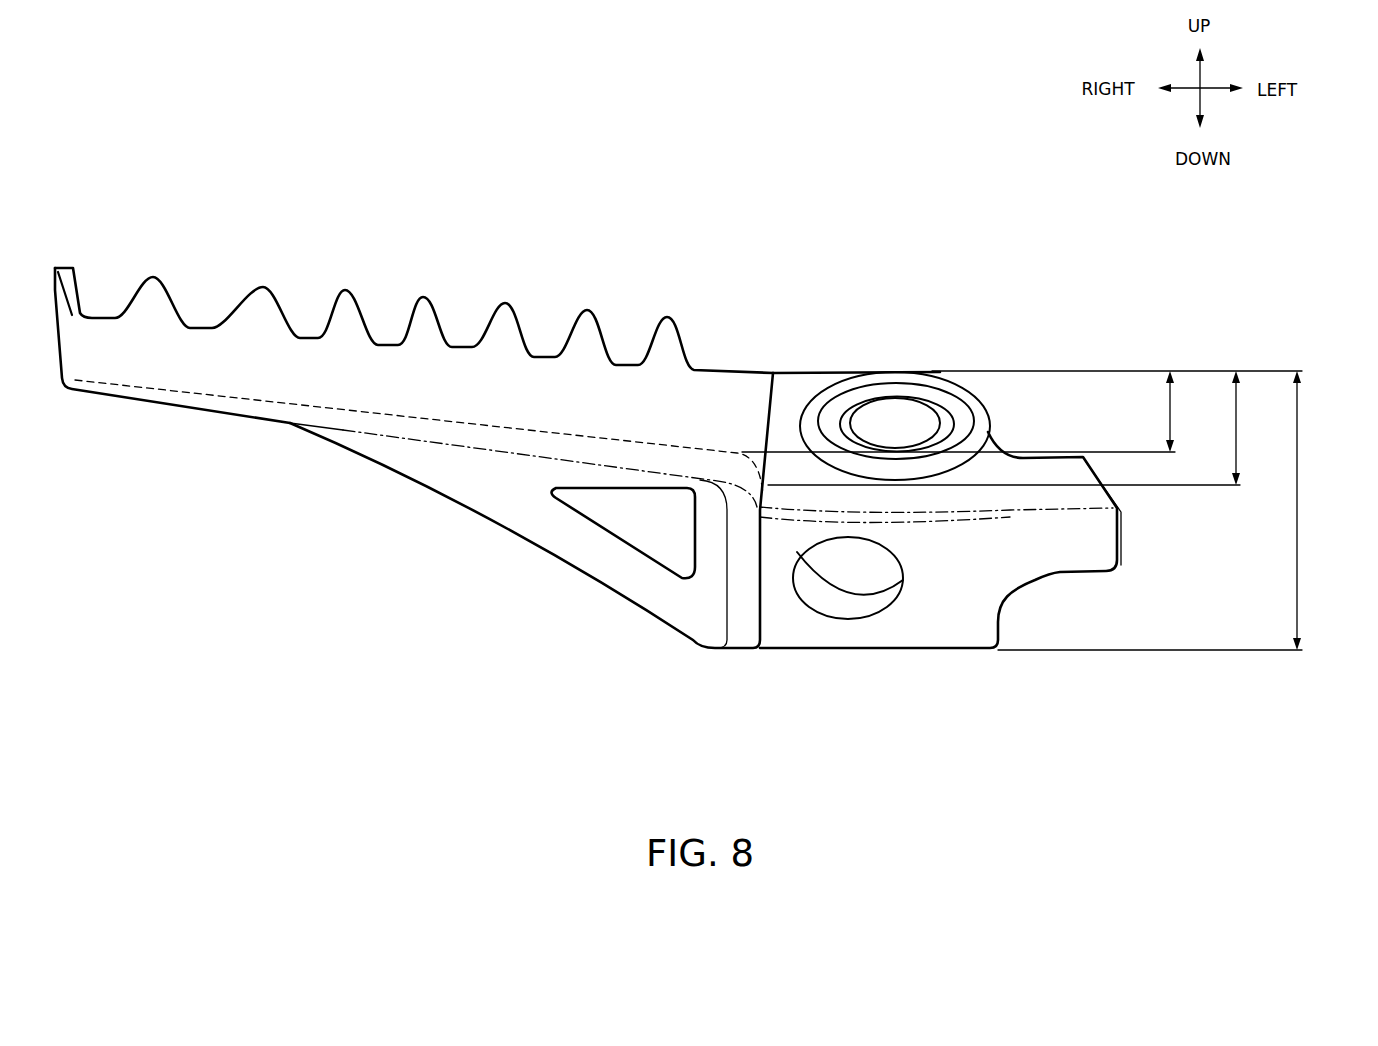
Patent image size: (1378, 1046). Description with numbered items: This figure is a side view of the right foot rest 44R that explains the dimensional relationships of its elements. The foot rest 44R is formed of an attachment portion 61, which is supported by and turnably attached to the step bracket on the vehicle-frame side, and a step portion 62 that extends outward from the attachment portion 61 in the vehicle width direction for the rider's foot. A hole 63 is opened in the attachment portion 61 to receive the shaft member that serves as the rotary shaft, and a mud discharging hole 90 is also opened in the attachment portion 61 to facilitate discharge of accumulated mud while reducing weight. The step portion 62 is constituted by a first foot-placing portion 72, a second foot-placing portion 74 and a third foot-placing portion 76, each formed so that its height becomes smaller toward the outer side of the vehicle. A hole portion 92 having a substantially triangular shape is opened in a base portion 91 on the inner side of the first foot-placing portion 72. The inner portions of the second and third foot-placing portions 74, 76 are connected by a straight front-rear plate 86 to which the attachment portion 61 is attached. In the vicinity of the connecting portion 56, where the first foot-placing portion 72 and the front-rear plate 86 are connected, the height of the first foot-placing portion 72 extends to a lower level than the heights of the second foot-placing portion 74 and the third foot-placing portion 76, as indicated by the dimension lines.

The foot rest 44R is at (822, 242).
The step portion 62 is at (345, 286).
The attachment portion 61 is at (907, 364).
The hole 63 is at (915, 400).
The second foot-placing portion 74 is at (343, 433).
The first foot-placing portion 72 is at (390, 457).
The third foot-placing portion 76 is at (483, 430).
The hole portion 92 is at (597, 525).
The base portion 91 is at (700, 633).
The connecting portion 56 is at (742, 590).
The front-rear plate 86 is at (750, 620).
The mud discharging hole 90 is at (852, 606).